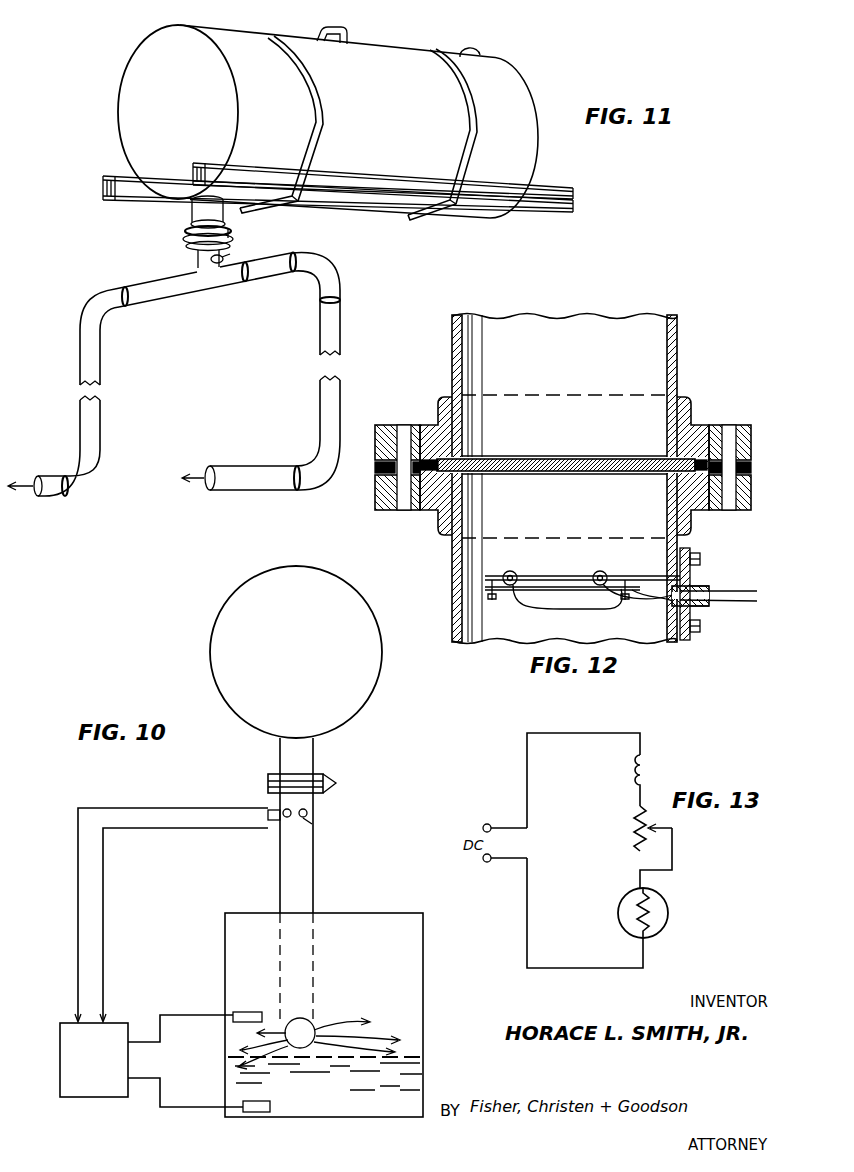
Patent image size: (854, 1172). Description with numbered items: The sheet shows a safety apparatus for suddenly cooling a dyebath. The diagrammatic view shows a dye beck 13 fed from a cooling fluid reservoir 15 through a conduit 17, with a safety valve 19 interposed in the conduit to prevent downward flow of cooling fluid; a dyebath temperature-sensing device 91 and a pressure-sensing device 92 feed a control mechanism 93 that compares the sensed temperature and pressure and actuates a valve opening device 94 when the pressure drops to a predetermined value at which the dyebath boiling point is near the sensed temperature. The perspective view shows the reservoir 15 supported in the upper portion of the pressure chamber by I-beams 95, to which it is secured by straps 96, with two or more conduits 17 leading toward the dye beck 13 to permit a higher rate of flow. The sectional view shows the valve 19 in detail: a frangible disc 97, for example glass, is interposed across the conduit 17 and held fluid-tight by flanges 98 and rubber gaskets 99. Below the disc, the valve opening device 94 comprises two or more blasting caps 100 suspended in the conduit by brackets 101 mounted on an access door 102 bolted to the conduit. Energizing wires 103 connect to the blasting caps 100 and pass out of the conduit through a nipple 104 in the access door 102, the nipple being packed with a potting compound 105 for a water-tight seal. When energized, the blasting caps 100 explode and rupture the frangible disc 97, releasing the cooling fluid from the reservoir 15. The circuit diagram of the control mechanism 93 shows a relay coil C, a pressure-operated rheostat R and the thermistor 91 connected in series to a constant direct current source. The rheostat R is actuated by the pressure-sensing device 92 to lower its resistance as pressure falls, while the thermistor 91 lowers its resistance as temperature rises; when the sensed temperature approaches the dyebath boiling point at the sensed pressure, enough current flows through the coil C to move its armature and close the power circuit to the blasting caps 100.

In FIG. 10, the dye beck 13 is at (424, 957).
In FIG. 11, the cooling fluid reservoir 15 is at (375, 56).
In FIG. 10, the cooling fluid reservoir 15 is at (211, 658).
In FIG. 11, the conduit 17 is at (196, 210).
In FIG. 12, the conduit 17 is at (452, 346).
In FIG. 10, the conduit 17 is at (305, 750).
In FIG. 11, the safety valve 19 is at (236, 236).
In FIG. 12, the safety valve 19 is at (563, 452).
In FIG. 10, the safety valve 19 is at (260, 788).
In FIG. 10, the temperature-sensing device 91 is at (250, 1112).
In FIG. 13, the temperature-sensing device 91 is at (668, 913).
In FIG. 10, the pressure-sensing device 92 is at (240, 1012).
In FIG. 10, the control mechanism 93 is at (74, 1032).
In FIG. 11, the valve opening device 94 is at (220, 272).
In FIG. 12, the valve opening device 94 is at (714, 588).
In FIG. 10, the valve opening device 94 is at (300, 822).
In FIG. 11, the I-beams 95 is at (123, 200).
In FIG. 11, the straps 96 is at (283, 42).
In FIG. 12, the frangible disc 97 is at (612, 459).
In FIG. 11, the flanges 98 is at (180, 233).
In FIG. 12, the flanges 98 is at (436, 429).
In FIG. 10, the flanges 98 is at (337, 783).
In FIG. 12, the rubber gaskets 99 is at (747, 430).
In FIG. 12, the blasting caps 100 is at (520, 578).
In FIG. 10, the blasting caps 100 is at (291, 808).
In FIG. 12, the brackets 101 is at (648, 578).
In FIG. 12, the access door 102 is at (688, 640).
In FIG. 12, the energizing wires 103 is at (618, 604).
In FIG. 12, the nipple 104 is at (700, 589).
In FIG. 12, the potting compound 105 is at (712, 601).
In FIG. 13, the relay coil C is at (648, 770).
In FIG. 13, the pressure-operated rheostat R is at (676, 849).